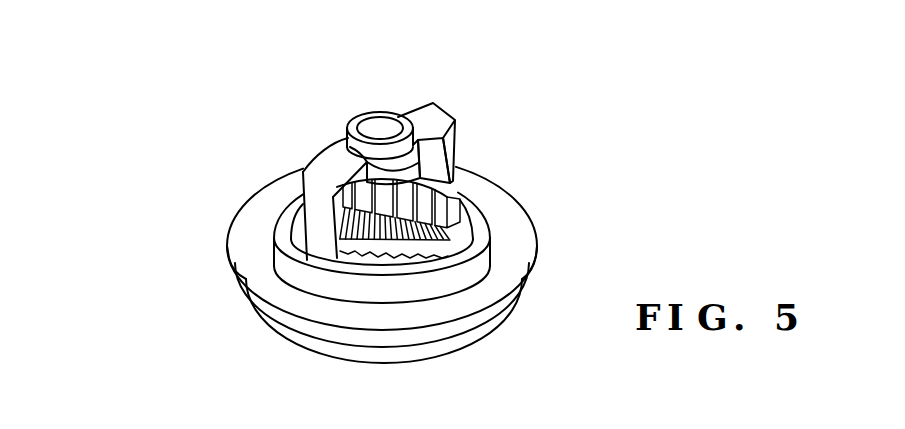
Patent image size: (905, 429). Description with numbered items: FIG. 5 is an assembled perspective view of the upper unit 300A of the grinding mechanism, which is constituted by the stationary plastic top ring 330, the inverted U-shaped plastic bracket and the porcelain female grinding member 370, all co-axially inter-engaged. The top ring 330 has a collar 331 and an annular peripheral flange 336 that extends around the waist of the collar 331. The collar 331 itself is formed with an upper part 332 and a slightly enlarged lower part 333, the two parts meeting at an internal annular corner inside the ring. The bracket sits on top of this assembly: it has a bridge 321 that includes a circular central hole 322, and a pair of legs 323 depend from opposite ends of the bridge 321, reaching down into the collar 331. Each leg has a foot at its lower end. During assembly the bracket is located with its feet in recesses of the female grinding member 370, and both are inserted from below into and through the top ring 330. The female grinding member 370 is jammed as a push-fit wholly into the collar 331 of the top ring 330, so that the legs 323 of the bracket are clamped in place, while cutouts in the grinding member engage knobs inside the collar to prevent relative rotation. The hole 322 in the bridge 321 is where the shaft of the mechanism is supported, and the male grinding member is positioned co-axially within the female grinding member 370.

The upper unit 300A is at (190, 90).
The bridge 321 is at (430, 112).
The circular central hole 322 is at (377, 123).
The legs 323 is at (453, 145).
The top ring 330 is at (530, 220).
The collar 331 is at (481, 247).
The upper part 332 is at (282, 212).
The lower part 333 is at (403, 357).
The annular peripheral flange 336 is at (492, 283).
The female grinding member 370 is at (461, 196).